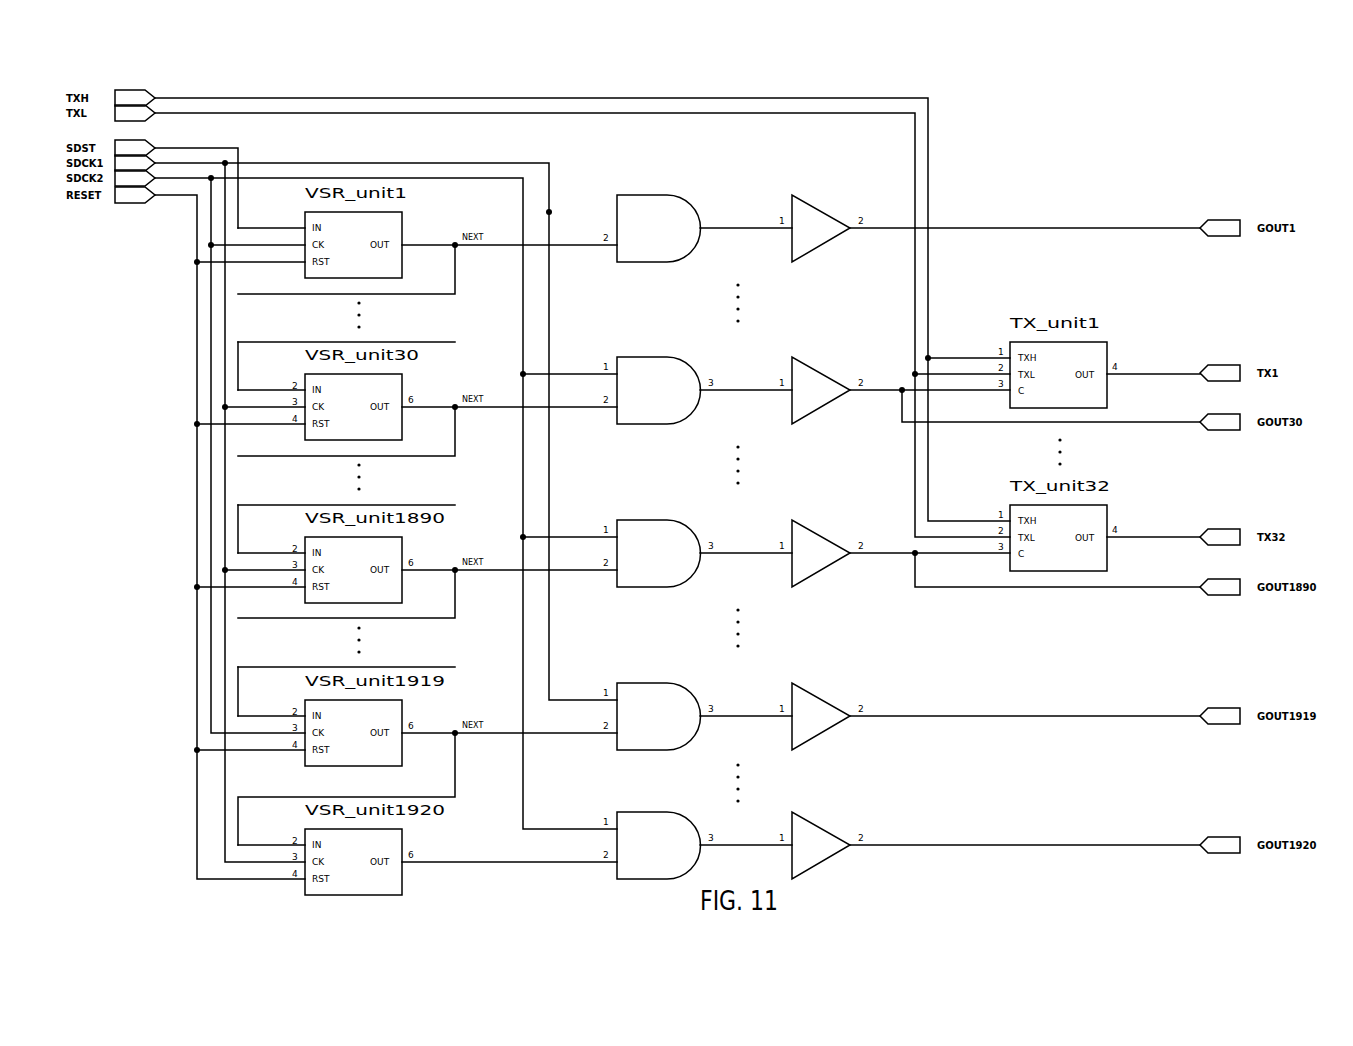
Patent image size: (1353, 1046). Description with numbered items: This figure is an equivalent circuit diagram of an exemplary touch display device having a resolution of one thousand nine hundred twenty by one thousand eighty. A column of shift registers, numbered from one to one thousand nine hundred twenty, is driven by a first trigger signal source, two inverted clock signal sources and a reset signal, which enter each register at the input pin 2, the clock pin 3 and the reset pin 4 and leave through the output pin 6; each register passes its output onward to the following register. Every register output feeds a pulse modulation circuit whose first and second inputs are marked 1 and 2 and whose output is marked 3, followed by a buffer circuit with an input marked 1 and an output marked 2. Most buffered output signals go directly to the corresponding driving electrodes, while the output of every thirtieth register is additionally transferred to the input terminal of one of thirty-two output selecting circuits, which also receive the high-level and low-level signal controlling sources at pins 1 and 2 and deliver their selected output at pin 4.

The AND gate clock input pin (from SDCK) 1 is at (549, 212).
The VSR unit IN pin 2 is at (271, 224).
The VSR unit CK pin 3 is at (256, 241).
The VSR unit RST pin 4 is at (249, 258).
The VSR unit OUT pin 6 is at (509, 240).